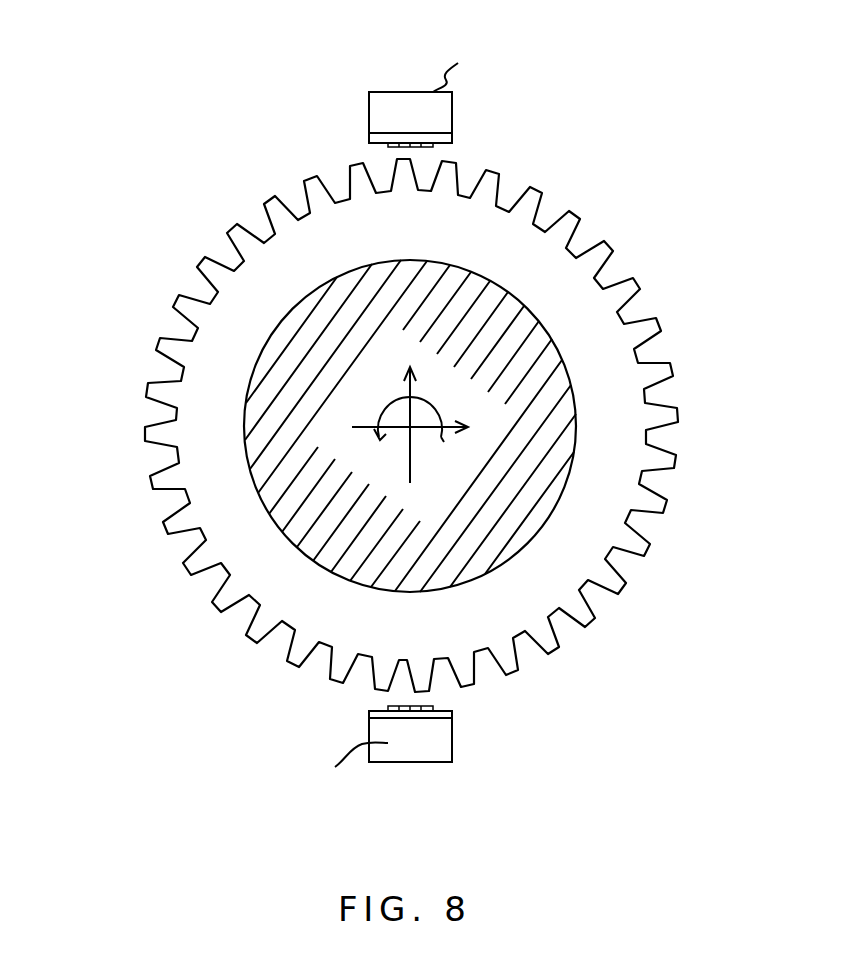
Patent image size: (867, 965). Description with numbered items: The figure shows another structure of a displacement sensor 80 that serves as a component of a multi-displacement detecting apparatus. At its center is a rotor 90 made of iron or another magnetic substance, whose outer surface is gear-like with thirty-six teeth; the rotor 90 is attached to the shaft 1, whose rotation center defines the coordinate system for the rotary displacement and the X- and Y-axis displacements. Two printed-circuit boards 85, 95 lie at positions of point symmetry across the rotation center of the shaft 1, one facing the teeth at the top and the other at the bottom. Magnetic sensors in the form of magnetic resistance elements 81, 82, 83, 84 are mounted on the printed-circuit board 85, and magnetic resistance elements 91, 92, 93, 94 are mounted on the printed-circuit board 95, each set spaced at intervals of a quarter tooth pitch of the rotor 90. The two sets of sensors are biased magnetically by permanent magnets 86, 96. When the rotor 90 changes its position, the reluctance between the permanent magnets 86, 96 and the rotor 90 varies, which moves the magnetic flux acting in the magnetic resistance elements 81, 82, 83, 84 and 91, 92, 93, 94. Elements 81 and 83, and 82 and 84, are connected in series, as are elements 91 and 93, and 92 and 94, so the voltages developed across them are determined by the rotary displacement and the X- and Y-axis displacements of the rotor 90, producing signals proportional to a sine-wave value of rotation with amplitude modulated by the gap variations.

The shaft 1 is at (273, 398).
The displacement sensor 80 is at (648, 95).
The magnetic resistance element 81 is at (436, 146).
The magnetic resistance element 82 is at (430, 149).
The magnetic resistance element 83 is at (395, 147).
The magnetic resistance element 84 is at (388, 147).
The printed-circuit board 85 is at (453, 139).
The permanent magnet 86 is at (456, 57).
The rotor 90 is at (560, 270).
The magnetic resistance element 91 is at (392, 708).
The magnetic resistance element 92 is at (392, 706).
The magnetic resistance element 93 is at (416, 706).
The magnetic resistance element 94 is at (433, 707).
The printed-circuit board 95 is at (369, 718).
The permanent magnet 96 is at (338, 771).